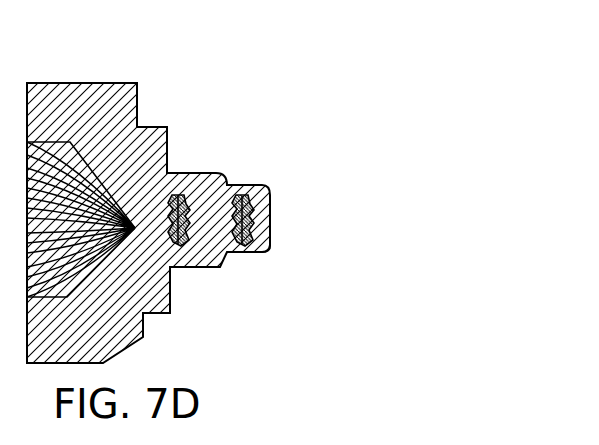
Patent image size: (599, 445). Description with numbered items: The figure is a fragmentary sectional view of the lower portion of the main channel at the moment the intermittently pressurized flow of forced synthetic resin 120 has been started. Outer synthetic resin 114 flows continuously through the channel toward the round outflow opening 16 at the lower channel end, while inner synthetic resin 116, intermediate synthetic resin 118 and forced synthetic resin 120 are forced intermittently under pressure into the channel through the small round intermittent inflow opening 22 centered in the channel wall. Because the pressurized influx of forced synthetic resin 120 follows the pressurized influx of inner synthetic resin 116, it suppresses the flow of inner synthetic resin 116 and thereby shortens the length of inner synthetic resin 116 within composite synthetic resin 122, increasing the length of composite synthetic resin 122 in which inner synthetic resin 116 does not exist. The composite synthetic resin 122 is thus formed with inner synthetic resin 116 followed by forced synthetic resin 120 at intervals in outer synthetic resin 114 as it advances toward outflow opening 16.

The outflow opening 16 is at (228, 254).
The intermittent inflow opening 22 is at (134, 228).
The outer synthetic resin 114 is at (245, 185).
The inner synthetic resin 116 is at (266, 232).
The intermediate synthetic resin 118 is at (192, 195).
The forced synthetic resin 120 is at (177, 193).
The composite synthetic resin 122 is at (272, 218).